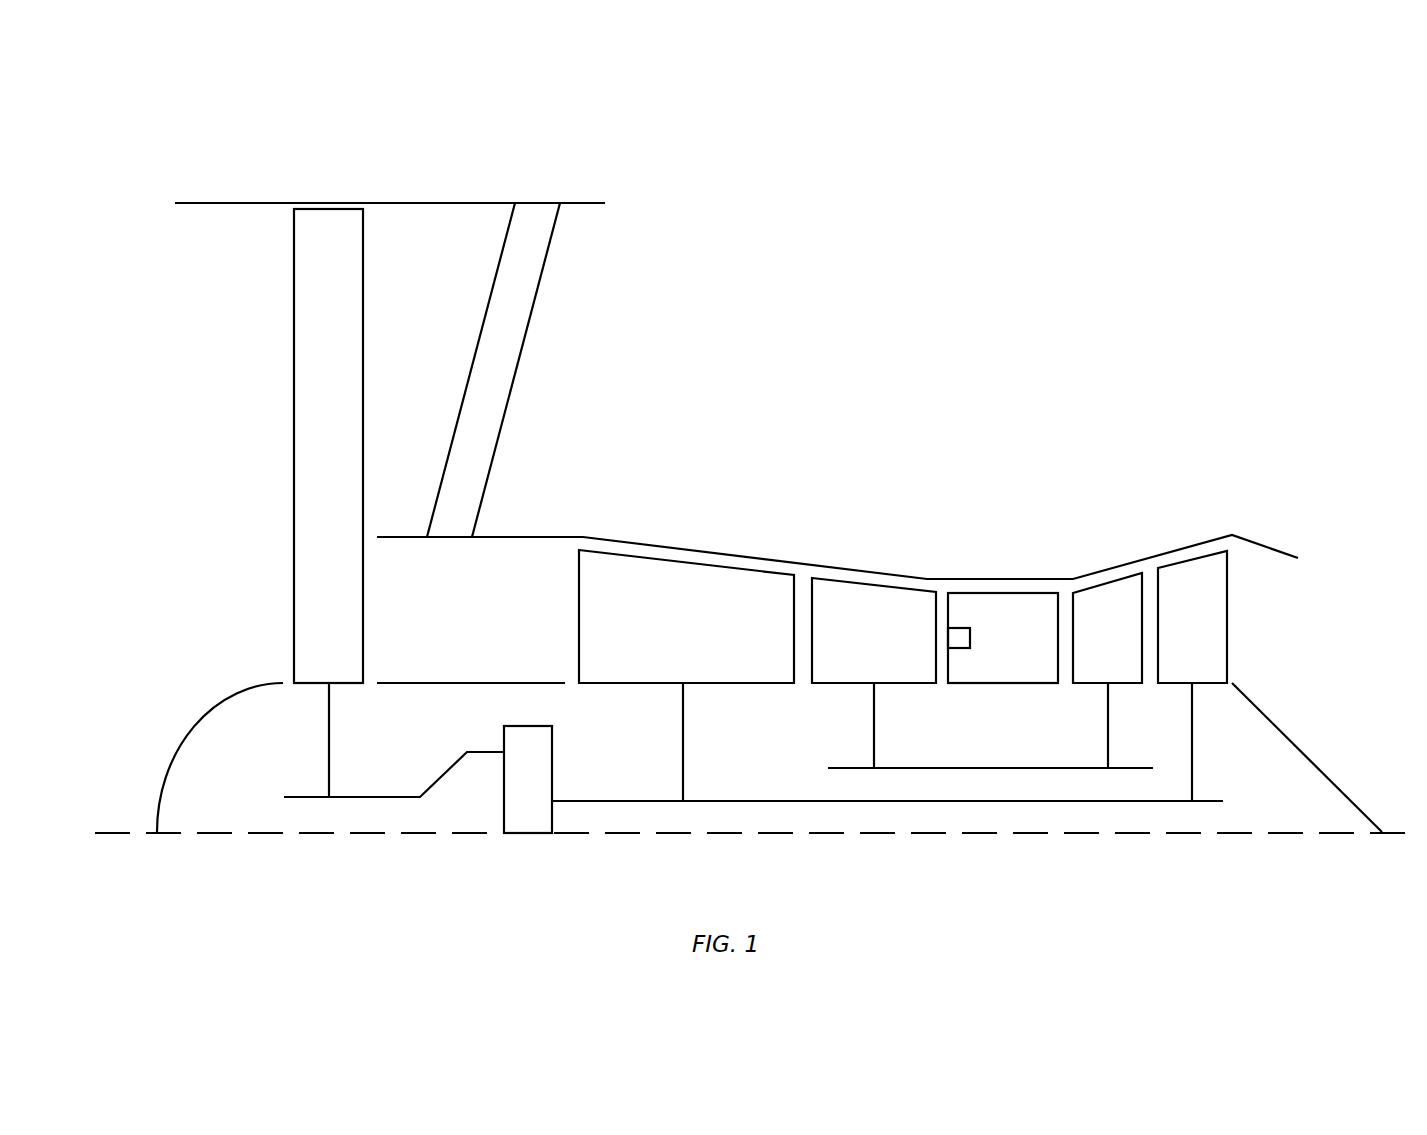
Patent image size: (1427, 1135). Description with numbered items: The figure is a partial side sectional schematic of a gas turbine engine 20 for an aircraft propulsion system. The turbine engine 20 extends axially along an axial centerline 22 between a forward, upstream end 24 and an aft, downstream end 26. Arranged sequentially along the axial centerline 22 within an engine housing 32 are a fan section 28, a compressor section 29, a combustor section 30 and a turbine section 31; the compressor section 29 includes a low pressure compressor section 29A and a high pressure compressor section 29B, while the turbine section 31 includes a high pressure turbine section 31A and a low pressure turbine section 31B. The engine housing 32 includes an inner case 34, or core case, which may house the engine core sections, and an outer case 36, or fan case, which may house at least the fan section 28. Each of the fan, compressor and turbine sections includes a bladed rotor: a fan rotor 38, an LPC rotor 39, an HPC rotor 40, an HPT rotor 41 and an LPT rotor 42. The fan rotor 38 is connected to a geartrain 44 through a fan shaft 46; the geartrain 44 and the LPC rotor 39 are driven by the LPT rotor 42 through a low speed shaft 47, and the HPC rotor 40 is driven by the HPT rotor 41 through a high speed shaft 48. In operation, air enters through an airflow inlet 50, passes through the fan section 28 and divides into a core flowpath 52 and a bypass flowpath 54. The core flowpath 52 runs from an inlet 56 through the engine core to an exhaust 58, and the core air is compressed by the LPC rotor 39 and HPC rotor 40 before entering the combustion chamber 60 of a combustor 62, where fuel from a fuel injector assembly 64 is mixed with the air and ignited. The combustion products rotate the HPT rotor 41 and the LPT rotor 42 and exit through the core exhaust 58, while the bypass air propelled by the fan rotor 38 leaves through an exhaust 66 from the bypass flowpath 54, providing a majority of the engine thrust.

The gas turbine engine 20 is at (114, 114).
The axial centerline 22 is at (110, 835).
The forward, upstream end 24 is at (175, 203).
The aft, downstream end 26 is at (1385, 828).
The fan section 28 is at (401, 178).
The compressor section 29 is at (938, 385).
The low pressure compressor (LPC) section 29A is at (793, 472).
The high pressure compressor (HPC) section 29B is at (938, 472).
The combustor section 30 is at (1058, 472).
The turbine section 31 is at (1225, 385).
The high pressure turbine (HPT) section 31A is at (1142, 472).
The low pressure turbine (LPT) section 31B is at (1225, 472).
The engine housing 32 is at (645, 205).
The inner case 34 is at (545, 502).
The outer case 36 is at (500, 188).
The fan rotor 38 is at (339, 446).
The LPC rotor 39 is at (696, 631).
The HPC rotor 40 is at (889, 644).
The HPT rotor 41 is at (1122, 646).
The LPT rotor 42 is at (1207, 636).
The geartrain 44 is at (545, 794).
The fan shaft 46 is at (372, 799).
The low speed shaft 47 is at (1135, 803).
The high speed shaft 48 is at (1000, 763).
The airflow inlet 50 is at (158, 394).
The core flowpath 52 is at (466, 633).
The bypass flowpath 54 is at (439, 359).
The inlet into the core flowpath 56 is at (375, 613).
The exhaust from the core flowpath 58 is at (1303, 640).
The combustion chamber 60 is at (1026, 652).
The combustor 62 is at (1050, 573).
The fuel injector assembly 64 is at (960, 628).
The exhaust from the bypass flowpath 66 is at (612, 283).